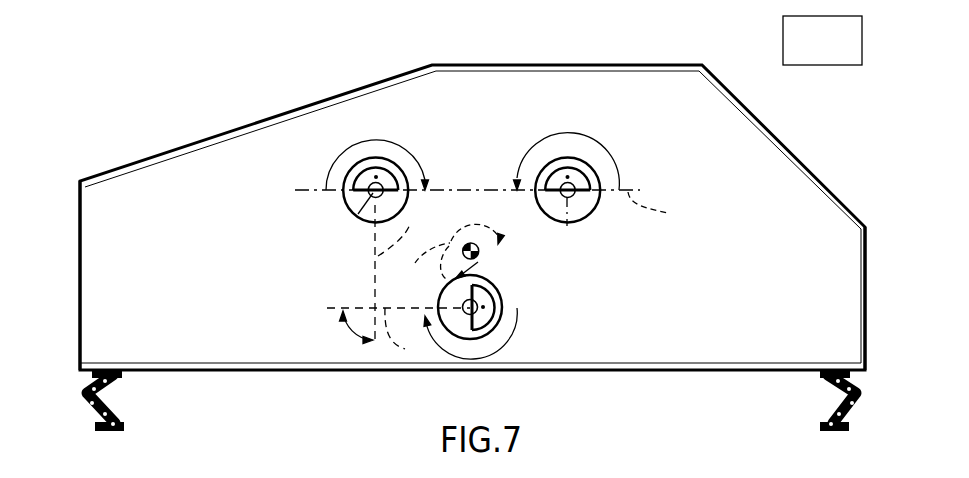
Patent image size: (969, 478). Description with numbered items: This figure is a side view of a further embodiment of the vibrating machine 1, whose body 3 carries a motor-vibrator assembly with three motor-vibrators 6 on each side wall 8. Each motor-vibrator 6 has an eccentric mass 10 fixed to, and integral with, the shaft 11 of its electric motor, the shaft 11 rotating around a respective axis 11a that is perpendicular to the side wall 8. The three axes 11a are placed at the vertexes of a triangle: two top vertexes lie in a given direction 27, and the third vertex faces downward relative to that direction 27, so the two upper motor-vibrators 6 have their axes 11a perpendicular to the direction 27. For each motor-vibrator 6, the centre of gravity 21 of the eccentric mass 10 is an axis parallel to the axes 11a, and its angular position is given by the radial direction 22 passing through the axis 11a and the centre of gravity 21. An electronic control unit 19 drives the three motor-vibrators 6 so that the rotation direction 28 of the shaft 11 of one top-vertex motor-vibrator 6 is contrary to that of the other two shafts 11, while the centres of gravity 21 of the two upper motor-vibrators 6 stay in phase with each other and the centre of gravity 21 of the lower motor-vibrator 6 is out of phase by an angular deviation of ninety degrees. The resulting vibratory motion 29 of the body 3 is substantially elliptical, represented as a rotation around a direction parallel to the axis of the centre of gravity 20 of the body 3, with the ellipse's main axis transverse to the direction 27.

The vibrating machine 1 is at (233, 78).
The body 3 is at (70, 297).
The motor-vibrator 6 is at (366, 227).
The side wall 8 is at (848, 311).
The eccentric mass 10 is at (390, 182).
The shaft 11 is at (372, 189).
The axis 11a is at (357, 217).
The electronic control unit 19 is at (834, 52).
The centre of gravity of the body 20 is at (480, 252).
The centre of gravity of the eccentric mass 21 is at (377, 176).
The radial direction 22 is at (410, 286).
The direction 27 is at (656, 215).
The rotation direction 28 is at (585, 173).
The elliptical vibratory motion 29 is at (452, 256).